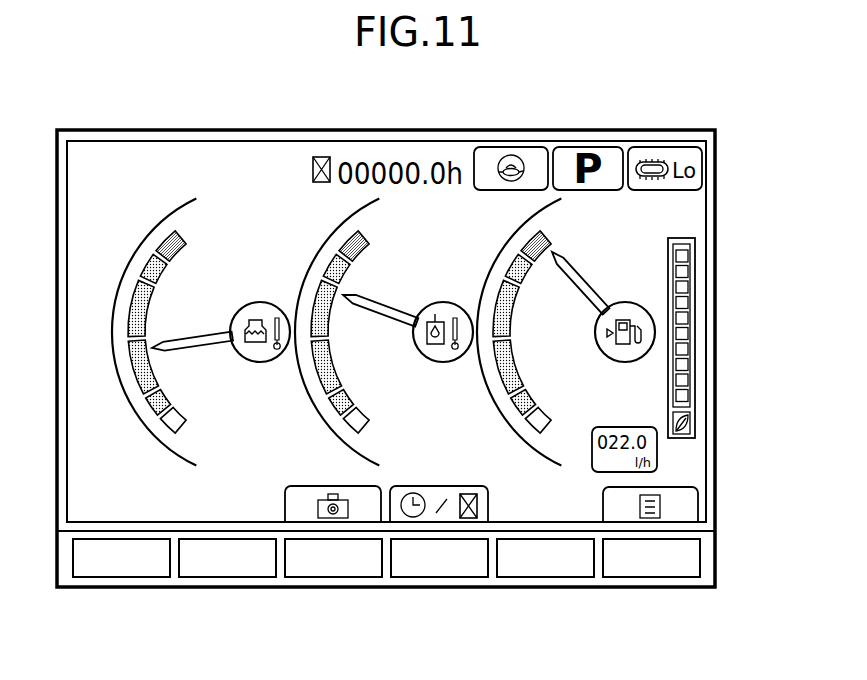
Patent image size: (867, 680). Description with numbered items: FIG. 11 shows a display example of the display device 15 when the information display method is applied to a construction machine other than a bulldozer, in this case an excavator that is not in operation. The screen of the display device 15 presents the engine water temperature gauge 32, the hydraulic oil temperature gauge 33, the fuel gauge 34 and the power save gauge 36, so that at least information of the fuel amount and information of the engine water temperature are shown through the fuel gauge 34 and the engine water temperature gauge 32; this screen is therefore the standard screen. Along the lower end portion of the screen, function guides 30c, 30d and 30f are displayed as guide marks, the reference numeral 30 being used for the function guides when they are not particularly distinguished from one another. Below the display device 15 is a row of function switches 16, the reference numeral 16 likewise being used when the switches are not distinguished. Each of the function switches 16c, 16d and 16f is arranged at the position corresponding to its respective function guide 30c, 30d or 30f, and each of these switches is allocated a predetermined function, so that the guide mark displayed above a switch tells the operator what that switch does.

The display device 15 is at (158, 162).
The engine water temperature gauge 32 is at (261, 268).
The hydraulic oil temperature gauge 33 is at (449, 268).
The fuel gauge 34 is at (629, 268).
The power save gauge 36 is at (690, 262).
The function guide 30 is at (428, 482).
The function guide 30c is at (298, 498).
The function guide 30d is at (428, 497).
The function guide 30f is at (686, 500).
The function switch 16 is at (431, 584).
The function switch 16c is at (333, 561).
The function switch 16d is at (441, 561).
The function switch 16f is at (652, 563).